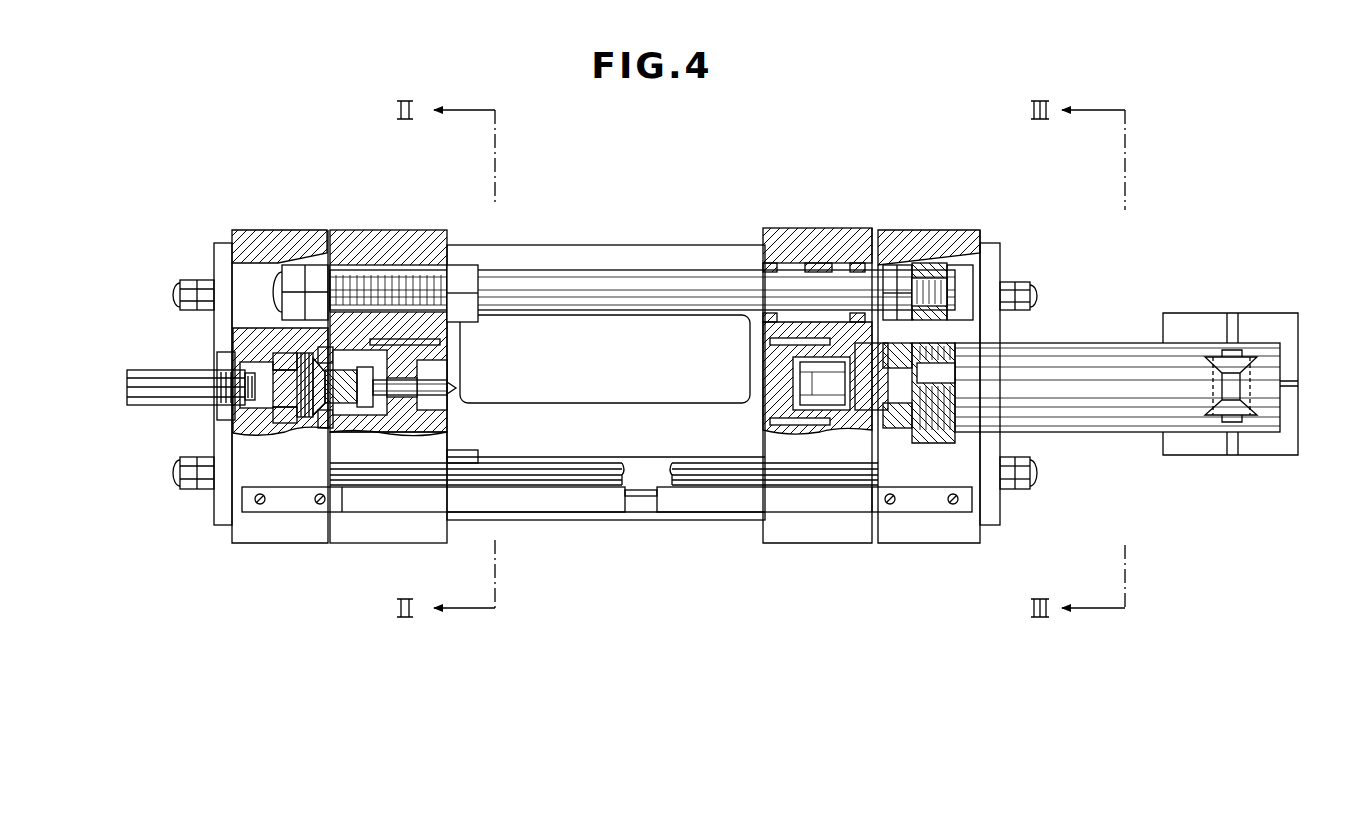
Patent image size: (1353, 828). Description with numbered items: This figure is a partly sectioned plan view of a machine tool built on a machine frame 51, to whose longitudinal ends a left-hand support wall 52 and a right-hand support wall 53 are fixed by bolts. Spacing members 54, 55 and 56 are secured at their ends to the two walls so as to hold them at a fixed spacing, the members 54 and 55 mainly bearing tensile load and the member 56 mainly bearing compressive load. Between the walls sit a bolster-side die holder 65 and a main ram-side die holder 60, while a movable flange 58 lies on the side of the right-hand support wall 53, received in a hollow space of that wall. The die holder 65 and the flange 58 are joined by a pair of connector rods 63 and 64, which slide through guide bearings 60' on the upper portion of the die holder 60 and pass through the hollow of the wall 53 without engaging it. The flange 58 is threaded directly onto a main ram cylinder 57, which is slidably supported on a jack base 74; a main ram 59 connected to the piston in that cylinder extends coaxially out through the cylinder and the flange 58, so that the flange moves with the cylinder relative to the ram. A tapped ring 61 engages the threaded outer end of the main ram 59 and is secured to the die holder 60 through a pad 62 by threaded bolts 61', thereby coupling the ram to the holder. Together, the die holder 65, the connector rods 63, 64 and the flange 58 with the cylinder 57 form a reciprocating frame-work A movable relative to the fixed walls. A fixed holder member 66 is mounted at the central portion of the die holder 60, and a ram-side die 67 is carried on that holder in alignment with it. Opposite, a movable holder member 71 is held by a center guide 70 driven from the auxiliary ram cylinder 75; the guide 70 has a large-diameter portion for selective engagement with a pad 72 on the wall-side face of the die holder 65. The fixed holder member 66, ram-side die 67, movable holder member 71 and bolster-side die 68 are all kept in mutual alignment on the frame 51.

The machine frame 51 is at (710, 236).
The left-hand support wall 52 is at (271, 345).
The right-hand support wall 53 is at (968, 230).
The spacing member 54 is at (1038, 297).
The spacing member 55 is at (627, 473).
The spacing member 56 is at (563, 498).
The main ram cylinder 57 is at (1117, 418).
The movable flange 58 is at (923, 272).
The main ram 59 is at (930, 372).
The main ram-side die holder 60 is at (817, 345).
The guide bearing 60' is at (806, 211).
The tapped ring 61 is at (897, 258).
The threaded bolt 61' is at (873, 432).
The pad 62 is at (858, 343).
The connector rod 63 is at (650, 270).
The connector rod 64 is at (647, 452).
The bolster-side die holder 65 is at (378, 230).
The fixed holder member 66 is at (830, 385).
The ram-side die 67 is at (763, 366).
The bolster-side die 68 is at (450, 366).
The center guide 70 is at (305, 410).
The movable holder member 71 is at (452, 390).
The pad 72 is at (327, 349).
The jack base 74 is at (1232, 313).
The auxiliary ram cylinder 75 is at (150, 370).
The reciprocating frame-work A is at (598, 280).